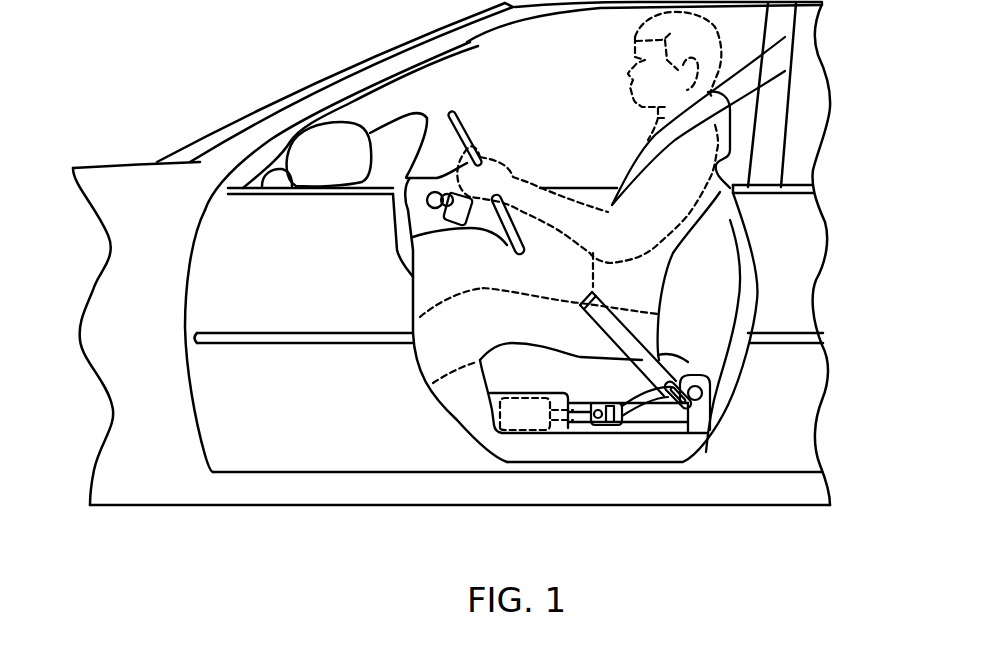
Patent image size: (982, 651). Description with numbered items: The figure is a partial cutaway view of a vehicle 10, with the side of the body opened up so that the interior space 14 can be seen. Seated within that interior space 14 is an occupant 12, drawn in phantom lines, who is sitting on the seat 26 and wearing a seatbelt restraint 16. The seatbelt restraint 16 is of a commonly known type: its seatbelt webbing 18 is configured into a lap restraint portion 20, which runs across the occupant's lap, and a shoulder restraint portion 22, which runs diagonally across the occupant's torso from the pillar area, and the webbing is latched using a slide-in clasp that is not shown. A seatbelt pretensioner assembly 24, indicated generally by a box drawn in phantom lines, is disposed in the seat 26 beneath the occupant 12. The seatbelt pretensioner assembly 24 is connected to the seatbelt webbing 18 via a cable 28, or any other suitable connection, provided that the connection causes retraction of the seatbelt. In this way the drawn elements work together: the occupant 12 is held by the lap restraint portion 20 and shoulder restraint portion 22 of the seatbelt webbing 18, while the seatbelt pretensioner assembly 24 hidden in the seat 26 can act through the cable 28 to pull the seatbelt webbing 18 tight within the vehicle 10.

The vehicle 10 is at (127, 180).
The occupant 12 is at (657, 200).
The interior space 14 is at (577, 105).
The seatbelt restraint 16 is at (647, 355).
The seatbelt webbing 18 is at (625, 337).
The lap restraint portion 20 is at (590, 298).
The shoulder restraint portion 22 is at (737, 74).
The seatbelt pretensioner assembly 24 is at (514, 434).
The seat 26 is at (498, 375).
The cable 28 is at (583, 424).